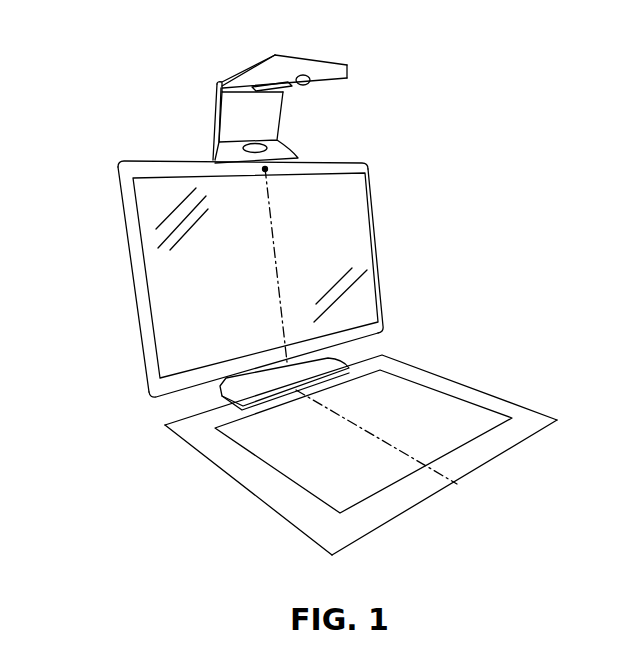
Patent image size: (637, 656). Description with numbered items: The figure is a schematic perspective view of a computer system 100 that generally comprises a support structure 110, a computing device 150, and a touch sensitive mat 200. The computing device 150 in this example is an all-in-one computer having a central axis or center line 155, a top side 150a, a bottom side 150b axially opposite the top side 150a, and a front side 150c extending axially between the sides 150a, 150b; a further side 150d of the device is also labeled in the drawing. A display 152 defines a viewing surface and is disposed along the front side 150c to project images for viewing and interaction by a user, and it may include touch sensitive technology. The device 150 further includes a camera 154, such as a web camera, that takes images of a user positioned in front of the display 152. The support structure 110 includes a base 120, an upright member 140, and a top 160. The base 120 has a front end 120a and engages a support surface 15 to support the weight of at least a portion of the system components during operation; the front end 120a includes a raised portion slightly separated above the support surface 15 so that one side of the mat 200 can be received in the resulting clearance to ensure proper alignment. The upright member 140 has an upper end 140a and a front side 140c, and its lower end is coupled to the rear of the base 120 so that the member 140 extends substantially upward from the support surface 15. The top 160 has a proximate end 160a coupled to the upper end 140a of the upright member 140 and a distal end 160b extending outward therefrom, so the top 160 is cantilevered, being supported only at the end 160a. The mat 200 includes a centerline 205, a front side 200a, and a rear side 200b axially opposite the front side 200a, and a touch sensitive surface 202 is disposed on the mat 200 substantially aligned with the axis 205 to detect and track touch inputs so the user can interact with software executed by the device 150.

The computer system 100 is at (467, 111).
The support structure 110 is at (115, 137).
The support surface 15 is at (227, 558).
The base 120 is at (220, 396).
The front end 120a is at (279, 399).
The upright member 140 is at (212, 128).
The upper end 140a is at (218, 82).
The front side 140c is at (268, 107).
The computing device 150 is at (383, 222).
The top side 150a is at (343, 160).
The bottom side 150b is at (362, 338).
The front side 150c is at (366, 276).
The display left edge 150d is at (117, 247).
The display 152 is at (193, 255).
The camera 154 is at (263, 168).
The center line 155 is at (275, 255).
The top 160 is at (288, 50).
The proximate end 160a is at (248, 70).
The distal end 160b is at (349, 65).
The touch sensitive mat 200 is at (517, 405).
The front side 200a is at (376, 528).
The rear side 200b is at (166, 427).
The touch sensitive surface 202 is at (448, 432).
The centerline 205 is at (360, 429).